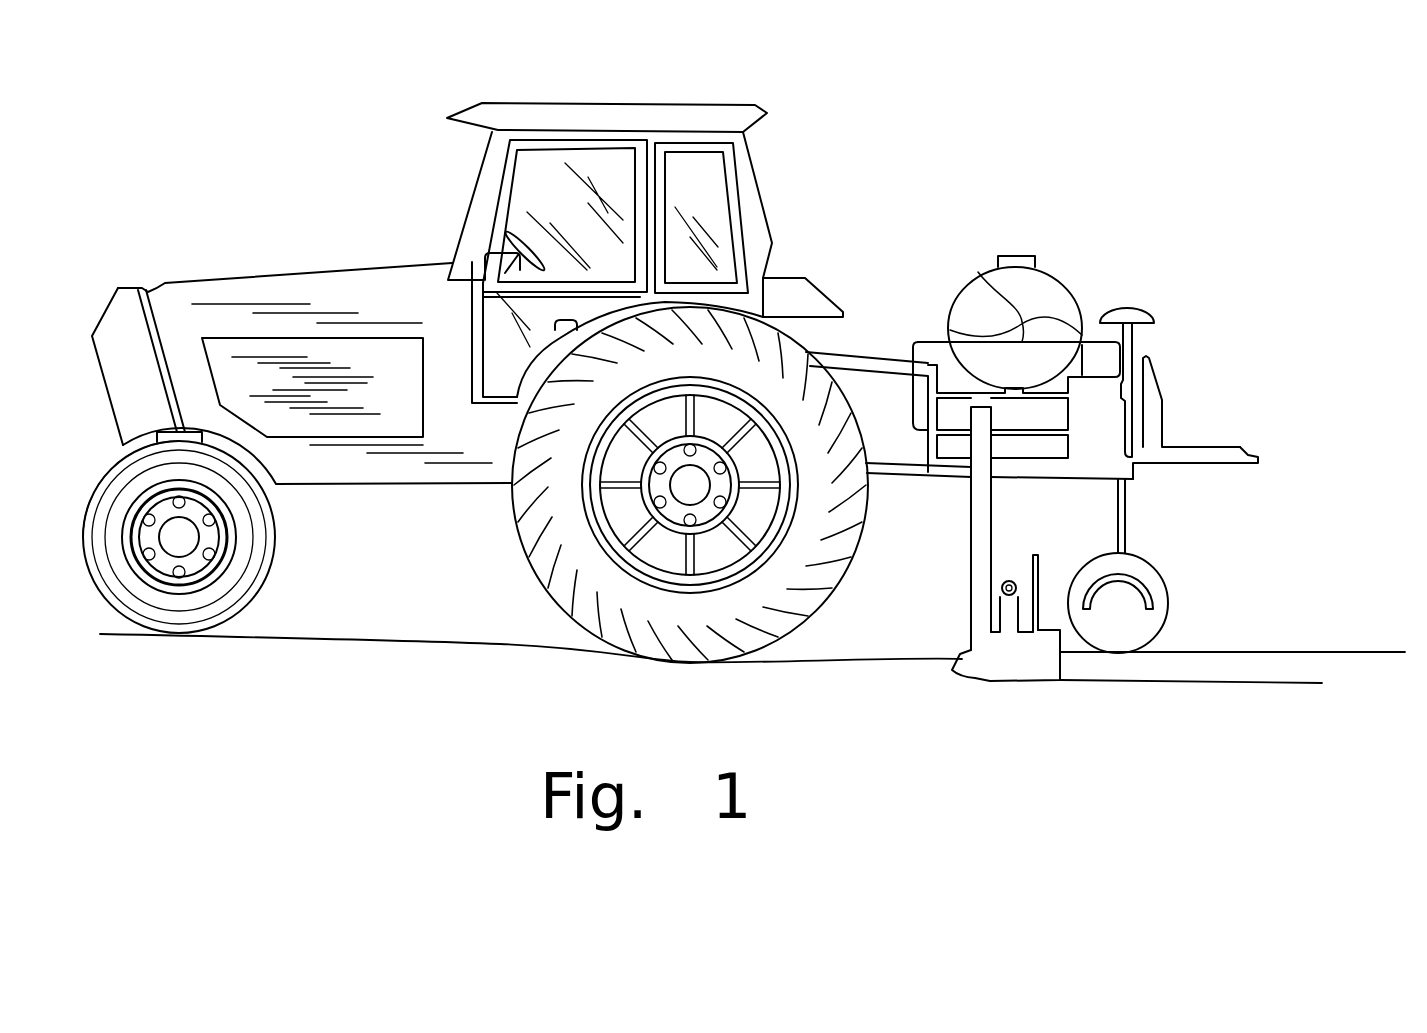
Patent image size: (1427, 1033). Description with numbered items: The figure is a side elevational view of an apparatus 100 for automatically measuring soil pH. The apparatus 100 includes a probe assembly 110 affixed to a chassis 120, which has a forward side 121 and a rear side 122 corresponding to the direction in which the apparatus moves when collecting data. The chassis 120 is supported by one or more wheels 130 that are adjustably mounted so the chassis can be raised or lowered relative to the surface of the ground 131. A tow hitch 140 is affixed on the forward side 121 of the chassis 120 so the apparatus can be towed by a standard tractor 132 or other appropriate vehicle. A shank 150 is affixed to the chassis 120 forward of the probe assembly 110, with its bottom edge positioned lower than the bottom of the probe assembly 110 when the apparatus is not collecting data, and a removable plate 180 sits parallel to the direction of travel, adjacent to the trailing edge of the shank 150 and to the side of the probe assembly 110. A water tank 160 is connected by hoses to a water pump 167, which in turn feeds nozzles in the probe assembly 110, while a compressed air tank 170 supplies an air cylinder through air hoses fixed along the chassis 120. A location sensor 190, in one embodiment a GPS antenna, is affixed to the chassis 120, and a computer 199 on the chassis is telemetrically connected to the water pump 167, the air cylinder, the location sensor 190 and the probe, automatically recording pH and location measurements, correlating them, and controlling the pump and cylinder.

The apparatus 100 is at (1236, 312).
The probe assembly 110 is at (981, 698).
The chassis 120 is at (968, 563).
The forward side 121 is at (966, 512).
The rear side 122 is at (1292, 463).
The wheels 130 is at (1078, 656).
The ground 131 is at (442, 642).
The tractor 132 is at (312, 272).
The tow hitch 140 is at (882, 453).
The shank 150 is at (952, 672).
The water tank 160 is at (955, 345).
The water pump 167 is at (1085, 350).
The compressed air tank 170 is at (945, 357).
The removable plate 180 is at (1040, 572).
The location sensor 190 is at (1138, 311).
The computer 199 is at (1162, 422).